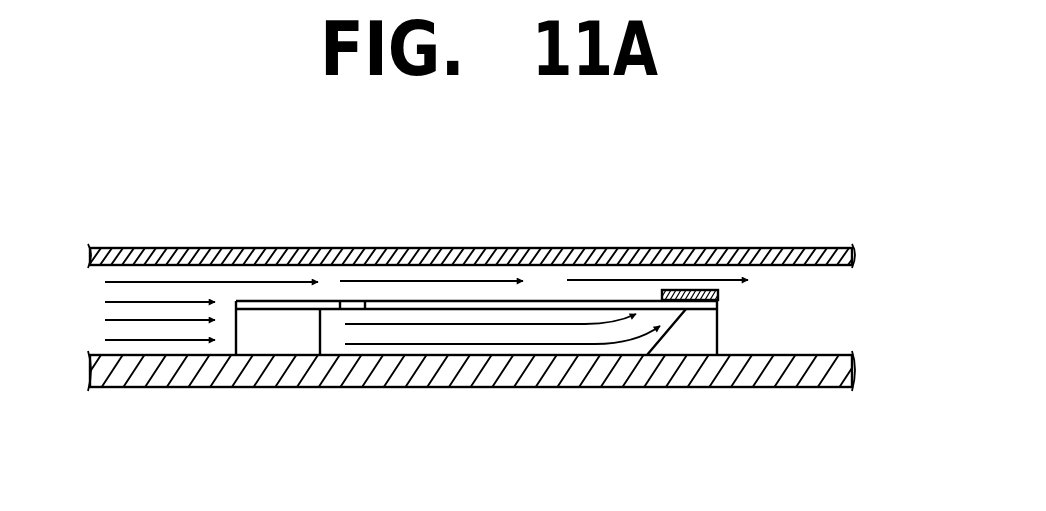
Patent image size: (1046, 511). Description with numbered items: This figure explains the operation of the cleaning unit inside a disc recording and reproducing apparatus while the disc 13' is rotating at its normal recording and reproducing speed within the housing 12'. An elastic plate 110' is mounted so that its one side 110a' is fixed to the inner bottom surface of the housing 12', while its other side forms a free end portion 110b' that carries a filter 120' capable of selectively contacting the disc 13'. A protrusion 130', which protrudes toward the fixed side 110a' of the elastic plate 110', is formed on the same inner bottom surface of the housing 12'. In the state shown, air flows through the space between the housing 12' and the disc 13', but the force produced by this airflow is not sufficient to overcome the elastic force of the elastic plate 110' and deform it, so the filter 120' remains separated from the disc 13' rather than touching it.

The disc 13' is at (474, 211).
The housing 12' is at (481, 411).
The elastic plate 110' is at (476, 230).
The one side of the elastic plate 110a' is at (258, 252).
The free end portion 110b' is at (785, 304).
The filter 120' is at (688, 224).
The protrusion 130' is at (683, 387).